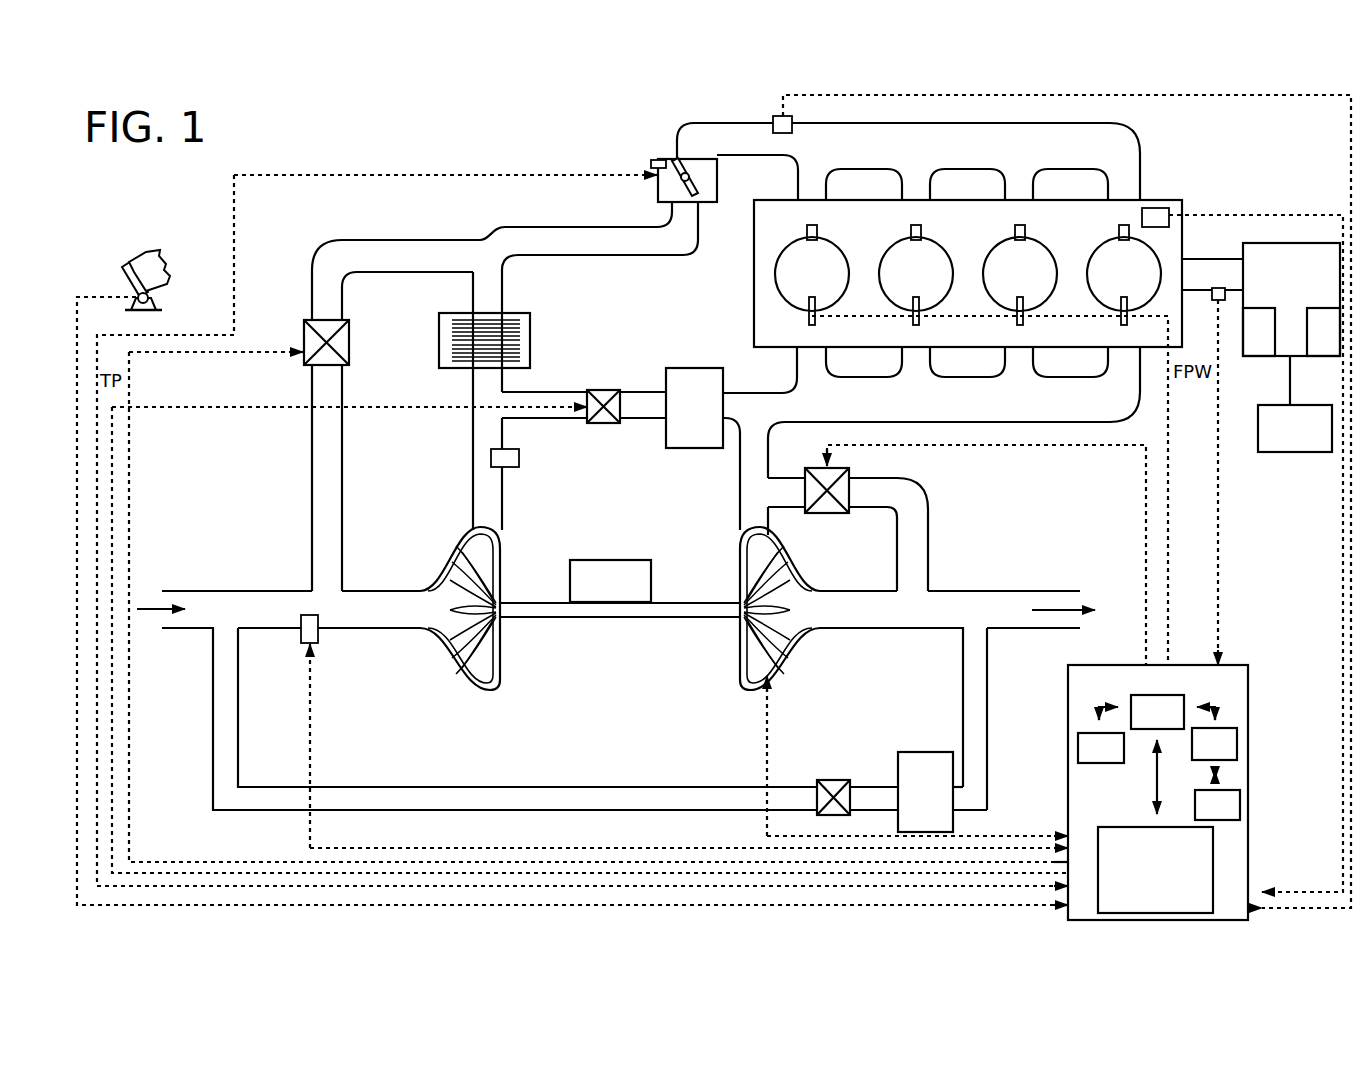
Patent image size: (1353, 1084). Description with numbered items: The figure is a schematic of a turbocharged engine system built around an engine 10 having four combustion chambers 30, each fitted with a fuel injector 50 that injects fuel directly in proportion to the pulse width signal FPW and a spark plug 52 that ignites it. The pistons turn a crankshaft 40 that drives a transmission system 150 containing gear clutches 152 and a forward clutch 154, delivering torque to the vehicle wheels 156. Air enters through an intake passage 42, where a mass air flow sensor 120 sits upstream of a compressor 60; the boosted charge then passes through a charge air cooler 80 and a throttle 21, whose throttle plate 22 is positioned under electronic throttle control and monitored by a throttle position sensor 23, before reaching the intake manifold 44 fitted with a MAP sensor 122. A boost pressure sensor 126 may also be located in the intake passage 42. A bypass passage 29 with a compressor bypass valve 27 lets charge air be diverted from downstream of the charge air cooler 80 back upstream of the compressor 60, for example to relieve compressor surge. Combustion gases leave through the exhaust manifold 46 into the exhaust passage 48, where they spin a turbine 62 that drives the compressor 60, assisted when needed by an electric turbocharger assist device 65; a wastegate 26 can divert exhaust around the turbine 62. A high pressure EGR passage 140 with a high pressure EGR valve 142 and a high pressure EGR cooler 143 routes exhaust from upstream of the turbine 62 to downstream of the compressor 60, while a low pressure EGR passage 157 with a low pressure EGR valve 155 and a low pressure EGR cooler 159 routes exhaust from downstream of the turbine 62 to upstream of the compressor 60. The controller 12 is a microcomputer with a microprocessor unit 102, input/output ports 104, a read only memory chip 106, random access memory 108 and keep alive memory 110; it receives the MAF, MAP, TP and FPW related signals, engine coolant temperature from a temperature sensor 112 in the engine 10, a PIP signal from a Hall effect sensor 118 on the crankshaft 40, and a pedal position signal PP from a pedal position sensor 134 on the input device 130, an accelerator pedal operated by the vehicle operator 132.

The engine 10 is at (1071, 228).
The controller 12 is at (1114, 806).
The throttle 21 is at (672, 162).
The throttle plate 22 is at (700, 195).
The throttle position sensor 23 is at (650, 163).
The wastegate 26 is at (852, 480).
The compressor bypass valve 27 is at (350, 335).
The bypass passage 29 is at (311, 500).
The combustion chamber 30 is at (823, 284).
The crankshaft 40 is at (1205, 258).
The intake passage 42 is at (223, 618).
The intake manifold 44 is at (848, 153).
The exhaust manifold 46 is at (979, 413).
The exhaust passage 48 is at (764, 461).
The fuel injector 50 is at (808, 322).
The spark plug 52 is at (827, 222).
The compressor 60 is at (460, 650).
The turbine 62 is at (780, 568).
The electric turbocharger assist device 65 is at (621, 593).
The charge air cooler 80 is at (520, 313).
The microprocessor unit 102 is at (1108, 702).
The input/output ports 104 is at (1203, 906).
The read only memory chip 106 is at (1078, 757).
The random access memory 108 is at (1234, 730).
The keep alive memory 110 is at (1235, 790).
The temperature sensor 112 is at (1158, 208).
The Hall effect sensor 118 is at (1213, 303).
The mass air flow sensor 120 is at (320, 636).
The MAP sensor 122 is at (792, 120).
The boost pressure sensor 126 is at (519, 463).
The input device 130 is at (125, 276).
The vehicle operator 132 is at (168, 272).
The pedal position sensor 134 is at (154, 300).
The high pressure EGR passage 140 is at (540, 392).
The high pressure EGR valve 142 is at (605, 390).
The high pressure EGR cooler 143 is at (712, 420).
The transmission system 150 is at (1308, 283).
The gear clutches 152 is at (1274, 350).
The forward clutch 154 is at (1339, 350).
The vehicle wheels 156 is at (1311, 441).
The low pressure EGR valve 155 is at (836, 780).
The low pressure EGR passage 157 is at (527, 787).
The low pressure EGR cooler 159 is at (944, 805).